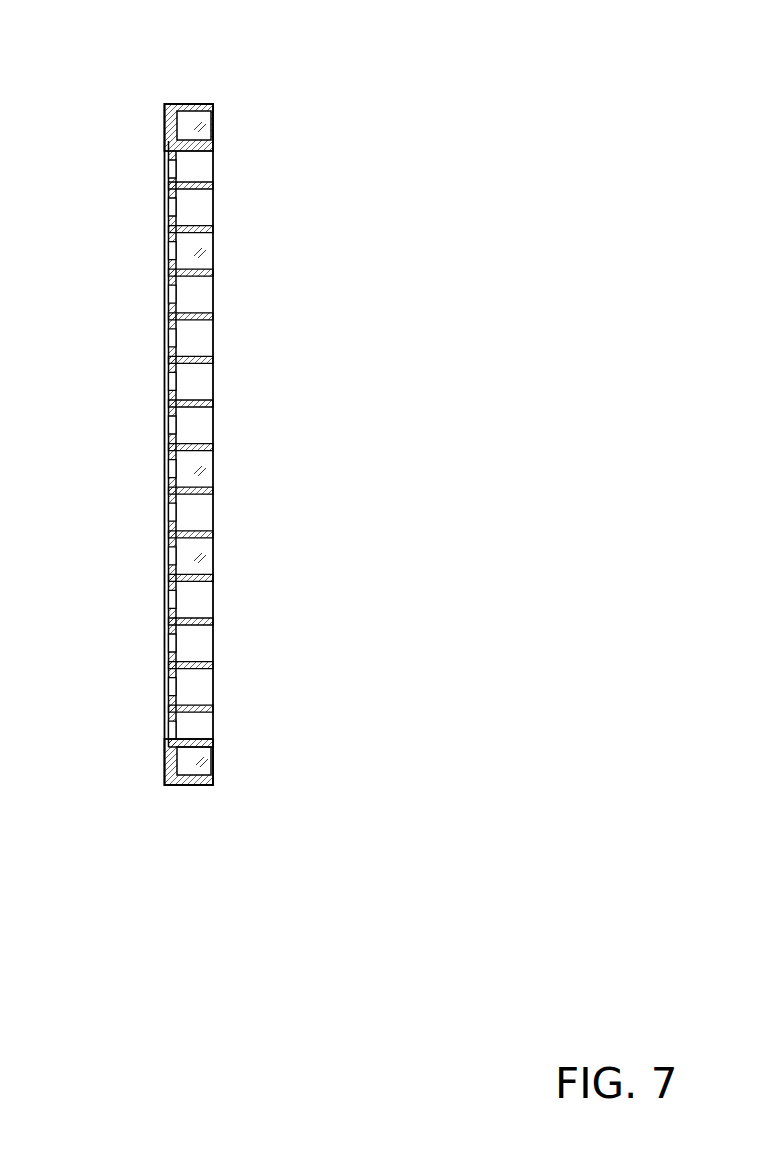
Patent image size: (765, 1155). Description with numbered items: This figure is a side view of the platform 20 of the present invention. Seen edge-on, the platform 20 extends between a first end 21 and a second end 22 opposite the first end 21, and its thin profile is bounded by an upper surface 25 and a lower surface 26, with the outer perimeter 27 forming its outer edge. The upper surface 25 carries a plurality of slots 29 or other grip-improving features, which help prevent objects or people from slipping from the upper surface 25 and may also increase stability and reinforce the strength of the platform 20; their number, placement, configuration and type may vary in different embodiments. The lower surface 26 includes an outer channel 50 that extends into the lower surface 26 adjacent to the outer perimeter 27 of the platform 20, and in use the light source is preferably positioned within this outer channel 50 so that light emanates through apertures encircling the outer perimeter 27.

The platform 20 is at (164, 575).
The first end 21 is at (192, 104).
The second end 22 is at (192, 785).
The upper surface 25 is at (168, 357).
The lower surface 26 is at (213, 357).
The outer perimeter 27 is at (169, 104).
The slots 29 is at (172, 252).
The outer channel 50 is at (177, 137).